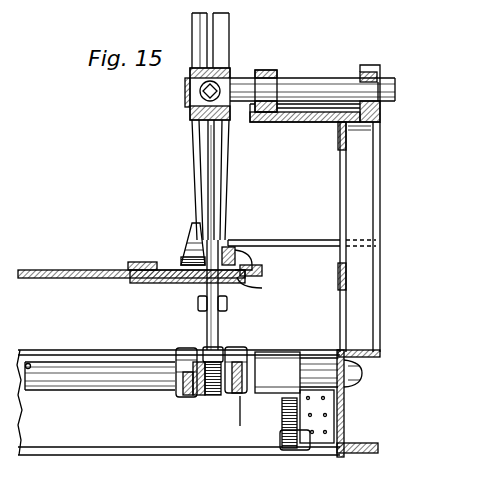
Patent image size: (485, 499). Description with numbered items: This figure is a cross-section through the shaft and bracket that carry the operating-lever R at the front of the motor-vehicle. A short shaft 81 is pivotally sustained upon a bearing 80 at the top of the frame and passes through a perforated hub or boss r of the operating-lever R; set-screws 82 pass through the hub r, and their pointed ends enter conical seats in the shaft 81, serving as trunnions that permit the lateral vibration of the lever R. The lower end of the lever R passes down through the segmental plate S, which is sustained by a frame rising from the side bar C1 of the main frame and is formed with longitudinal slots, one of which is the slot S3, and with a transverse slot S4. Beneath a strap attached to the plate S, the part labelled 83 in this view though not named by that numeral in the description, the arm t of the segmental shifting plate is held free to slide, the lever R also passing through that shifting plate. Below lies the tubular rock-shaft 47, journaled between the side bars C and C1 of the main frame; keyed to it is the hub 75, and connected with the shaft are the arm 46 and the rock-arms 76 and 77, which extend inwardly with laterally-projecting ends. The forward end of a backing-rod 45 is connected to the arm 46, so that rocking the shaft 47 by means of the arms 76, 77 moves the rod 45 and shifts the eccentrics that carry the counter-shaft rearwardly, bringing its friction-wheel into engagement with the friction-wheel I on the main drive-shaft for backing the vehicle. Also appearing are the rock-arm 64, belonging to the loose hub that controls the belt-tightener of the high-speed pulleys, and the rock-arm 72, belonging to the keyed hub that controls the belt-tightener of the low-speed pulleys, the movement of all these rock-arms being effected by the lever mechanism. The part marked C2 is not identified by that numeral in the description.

The operating-lever R is at (219, 40).
The hub or boss r is at (190, 76).
The short shaft 81 is at (314, 86).
The set-screws 82 is at (188, 104).
The bearing 80 is at (310, 122).
The segmental plate S is at (359, 239).
The longitudinal slot S3 is at (297, 238).
The friction-wheel I is at (193, 241).
The transverse slot S4 is at (262, 288).
The arm of the segmental shifting plate t is at (131, 266).
The block 83 is at (143, 262).
The rock-arm 76 is at (228, 304).
The housing tube C2 is at (178, 402).
The rock-arm 64 is at (185, 360).
The hub 75 is at (204, 396).
The rock-arm 77 is at (218, 356).
The rock-arm 72 is at (243, 357).
The arm 46 is at (277, 372).
The rock-shaft 47 is at (311, 370).
The backing-rod 45 is at (303, 452).
The side bar C is at (346, 408).
The side bar C1 is at (346, 431).